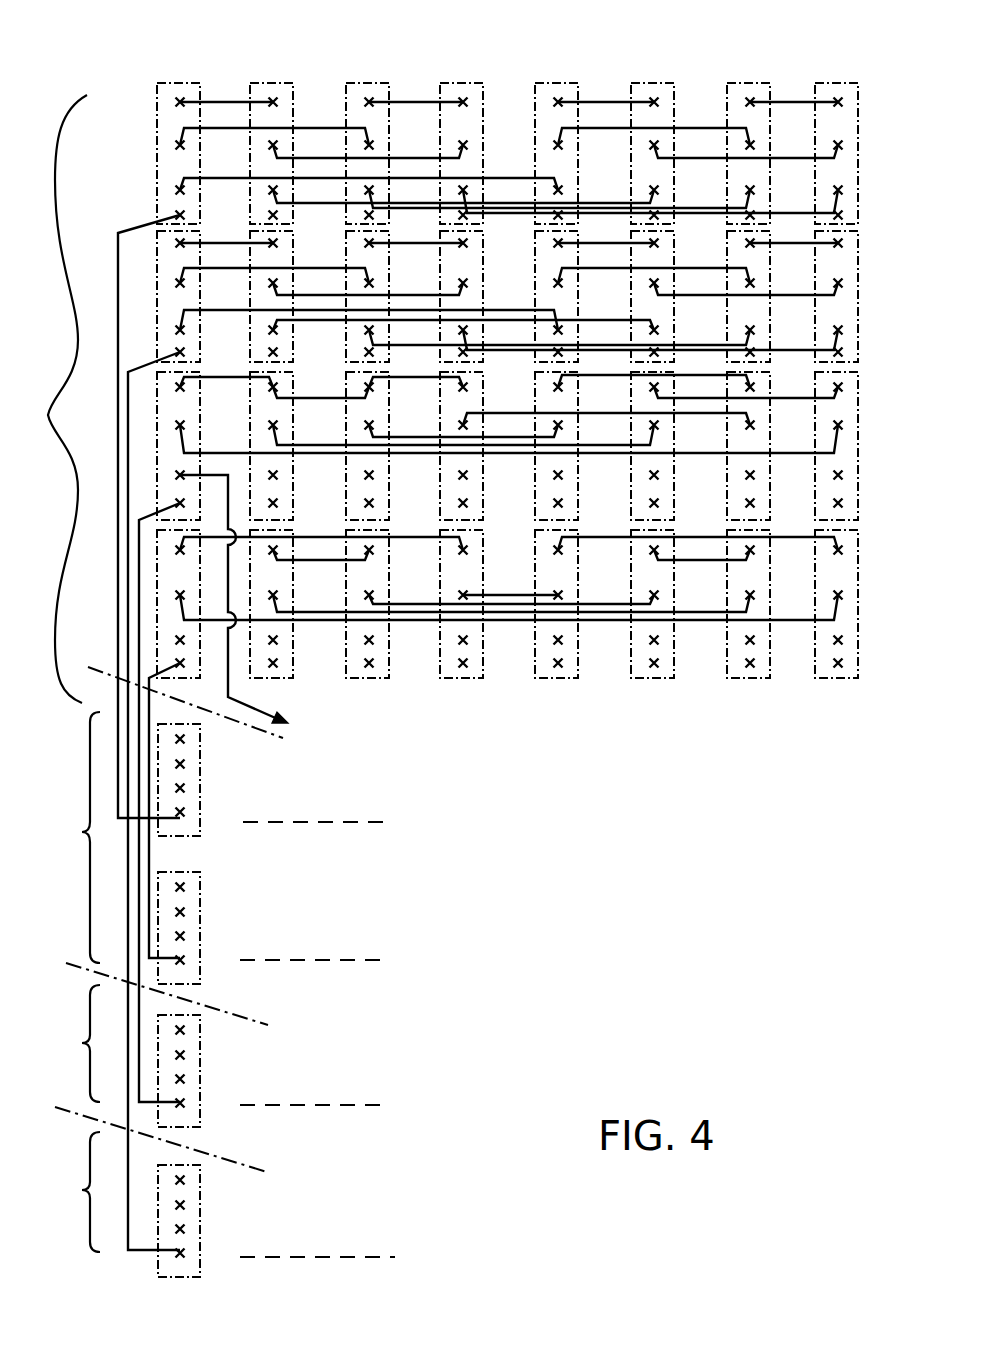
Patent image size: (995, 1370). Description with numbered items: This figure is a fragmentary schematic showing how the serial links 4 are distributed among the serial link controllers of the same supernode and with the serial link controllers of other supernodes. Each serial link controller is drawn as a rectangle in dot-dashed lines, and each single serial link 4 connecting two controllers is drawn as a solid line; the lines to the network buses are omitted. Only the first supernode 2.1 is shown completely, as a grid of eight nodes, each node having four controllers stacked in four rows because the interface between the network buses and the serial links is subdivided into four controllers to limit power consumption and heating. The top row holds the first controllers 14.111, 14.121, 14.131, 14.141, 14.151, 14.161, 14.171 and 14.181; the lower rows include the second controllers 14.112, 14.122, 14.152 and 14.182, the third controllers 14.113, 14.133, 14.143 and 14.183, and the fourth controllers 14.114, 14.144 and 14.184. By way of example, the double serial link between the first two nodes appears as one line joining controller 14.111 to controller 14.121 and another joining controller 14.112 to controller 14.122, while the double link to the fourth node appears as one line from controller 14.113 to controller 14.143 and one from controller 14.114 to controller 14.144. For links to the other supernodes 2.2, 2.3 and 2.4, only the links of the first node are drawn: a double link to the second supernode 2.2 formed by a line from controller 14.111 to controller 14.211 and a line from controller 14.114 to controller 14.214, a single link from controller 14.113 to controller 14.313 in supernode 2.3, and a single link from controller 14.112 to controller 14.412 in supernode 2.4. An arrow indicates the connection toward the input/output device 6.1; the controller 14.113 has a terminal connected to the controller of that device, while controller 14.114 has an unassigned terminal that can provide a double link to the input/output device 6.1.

The serial link 4 is at (226, 101).
The first supernode 2.1 is at (57, 399).
The supernode 2.2 is at (69, 837).
The supernode 2.3 is at (67, 1043).
The supernode 2.4 is at (67, 1192).
The input/output device 6.1 is at (385, 606).
The first serial link controller of node 1.11 14.111 is at (172, 82).
The first serial link controller of node 1.12 14.121 is at (265, 82).
The first serial link controller of node 1.13 14.131 is at (369, 82).
The first serial link controller of node 1.14 14.141 is at (460, 82).
The first serial link controller of node 1.15 14.151 is at (557, 82).
The first serial link controller of node 1.16 14.161 is at (655, 82).
The first serial link controller of node 1.17 14.171 is at (759, 82).
The first serial link controller of node 1.18 14.181 is at (849, 82).
The second serial link controller of node 1.11 14.112 is at (183, 257).
The second serial link controller of node 1.12 14.122 is at (278, 258).
The second serial link controller of node 1.15 14.152 is at (548, 252).
The second serial link controller of node 1.18 14.182 is at (842, 262).
The third serial link controller of node 1.11 14.113 is at (177, 410).
The third serial link controller of node 1.13 14.133 is at (363, 416).
The third serial link controller of node 1.14 14.143 is at (463, 406).
The third serial link controller of node 1.18 14.183 is at (842, 403).
The fourth serial link controller of node 1.11 14.114 is at (165, 565).
The fourth serial link controller of node 1.14 14.144 is at (463, 571).
The fourth serial link controller of node 1.18 14.184 is at (842, 574).
The first serial link controller of node 1.21 14.211 is at (194, 778).
The fourth serial link controller of node 1.21 14.214 is at (194, 898).
The third serial link controller of node 1.31 14.313 is at (194, 1052).
The second serial link controller of node 1.41 14.412 is at (194, 1209).